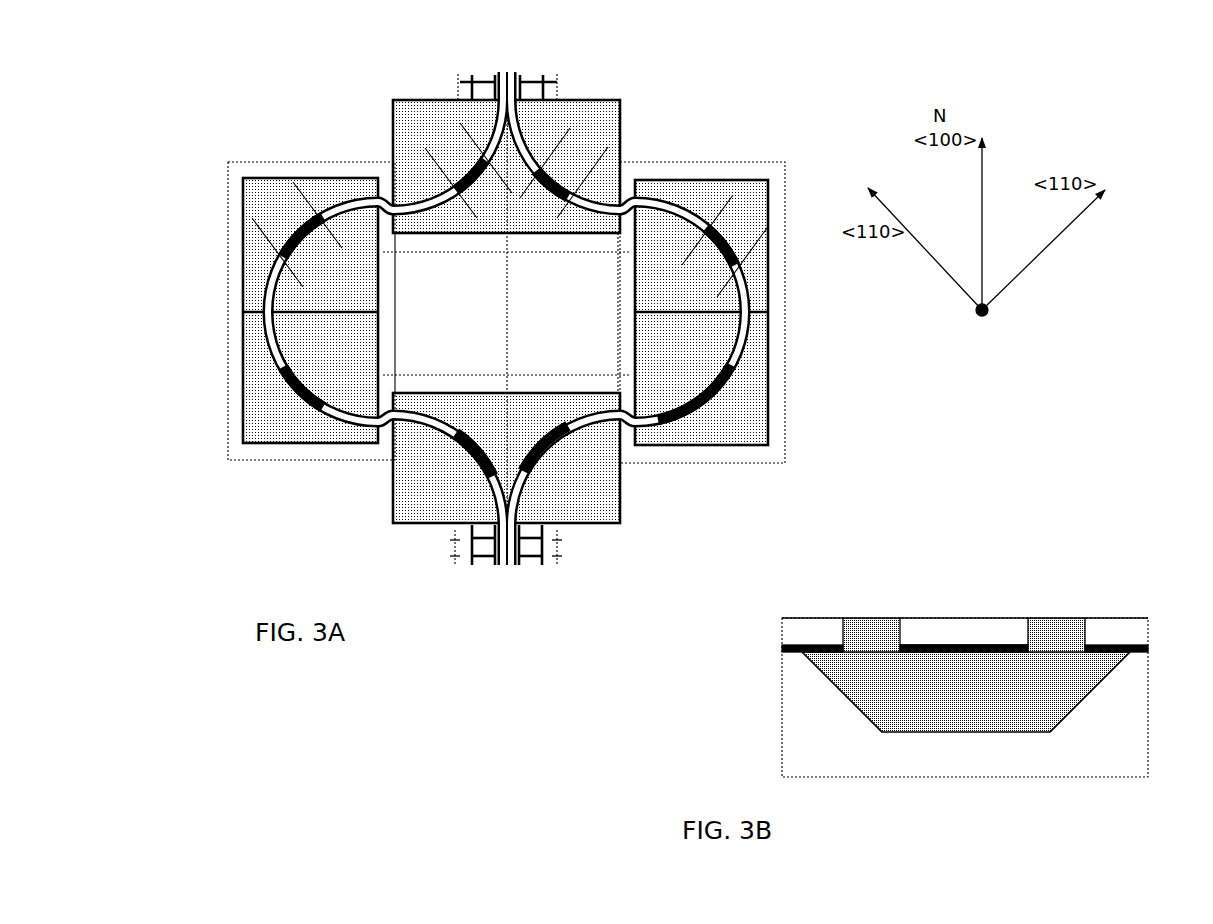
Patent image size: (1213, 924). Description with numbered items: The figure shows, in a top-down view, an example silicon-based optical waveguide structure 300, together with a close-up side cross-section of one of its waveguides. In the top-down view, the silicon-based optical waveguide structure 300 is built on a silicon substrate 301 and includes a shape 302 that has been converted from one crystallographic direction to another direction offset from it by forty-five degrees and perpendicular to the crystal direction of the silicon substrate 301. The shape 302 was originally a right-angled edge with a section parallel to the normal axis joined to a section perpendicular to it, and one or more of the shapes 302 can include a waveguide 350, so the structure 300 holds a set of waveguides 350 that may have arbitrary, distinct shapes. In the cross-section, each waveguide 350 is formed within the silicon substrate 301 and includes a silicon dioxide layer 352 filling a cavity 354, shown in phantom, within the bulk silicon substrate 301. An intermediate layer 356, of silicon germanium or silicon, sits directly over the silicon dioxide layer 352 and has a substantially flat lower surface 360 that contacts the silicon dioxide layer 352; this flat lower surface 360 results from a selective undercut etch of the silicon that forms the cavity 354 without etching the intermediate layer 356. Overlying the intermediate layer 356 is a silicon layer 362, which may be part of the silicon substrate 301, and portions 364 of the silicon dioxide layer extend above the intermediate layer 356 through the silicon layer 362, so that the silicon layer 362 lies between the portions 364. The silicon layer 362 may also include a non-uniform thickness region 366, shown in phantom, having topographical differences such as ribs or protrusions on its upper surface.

In FIG. 3A, the silicon-based optical waveguide structure 300 is at (222, 89).
In FIG. 3A, the silicon substrate 301 is at (369, 282).
In FIG. 3B, the silicon substrate 301 is at (992, 761).
In FIG. 3A, the shape 302 is at (300, 217).
In FIG. 3B, the waveguide 350 is at (781, 576).
In FIG. 3B, the silicon dioxide layer 352 is at (897, 710).
In FIG. 3B, the cavity 354 is at (1088, 701).
In FIG. 3B, the intermediate layer 356 is at (782, 647).
In FIG. 3B, the lower surface 360 is at (797, 655).
In FIG. 3B, the silicon layer 362 is at (968, 618).
In FIG. 3B, the portions of the silicon dioxide layer 364 is at (853, 618).
In FIG. 3B, the non-uniform thickness region 366 is at (938, 611).